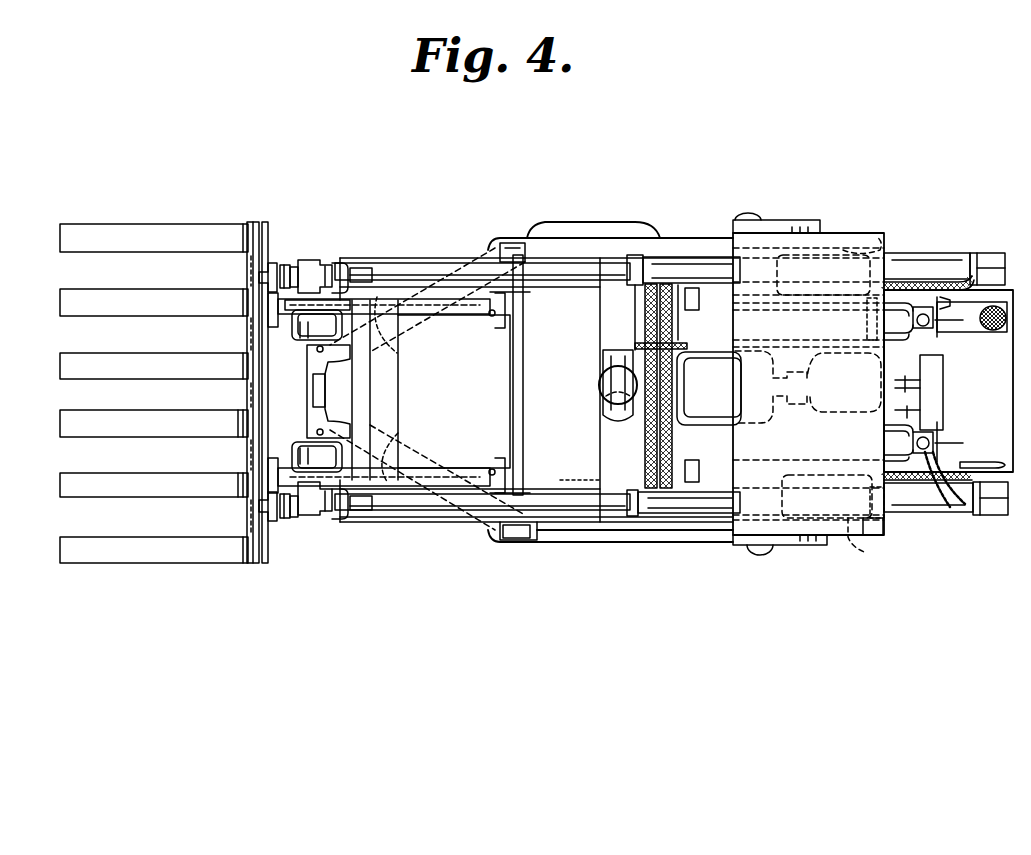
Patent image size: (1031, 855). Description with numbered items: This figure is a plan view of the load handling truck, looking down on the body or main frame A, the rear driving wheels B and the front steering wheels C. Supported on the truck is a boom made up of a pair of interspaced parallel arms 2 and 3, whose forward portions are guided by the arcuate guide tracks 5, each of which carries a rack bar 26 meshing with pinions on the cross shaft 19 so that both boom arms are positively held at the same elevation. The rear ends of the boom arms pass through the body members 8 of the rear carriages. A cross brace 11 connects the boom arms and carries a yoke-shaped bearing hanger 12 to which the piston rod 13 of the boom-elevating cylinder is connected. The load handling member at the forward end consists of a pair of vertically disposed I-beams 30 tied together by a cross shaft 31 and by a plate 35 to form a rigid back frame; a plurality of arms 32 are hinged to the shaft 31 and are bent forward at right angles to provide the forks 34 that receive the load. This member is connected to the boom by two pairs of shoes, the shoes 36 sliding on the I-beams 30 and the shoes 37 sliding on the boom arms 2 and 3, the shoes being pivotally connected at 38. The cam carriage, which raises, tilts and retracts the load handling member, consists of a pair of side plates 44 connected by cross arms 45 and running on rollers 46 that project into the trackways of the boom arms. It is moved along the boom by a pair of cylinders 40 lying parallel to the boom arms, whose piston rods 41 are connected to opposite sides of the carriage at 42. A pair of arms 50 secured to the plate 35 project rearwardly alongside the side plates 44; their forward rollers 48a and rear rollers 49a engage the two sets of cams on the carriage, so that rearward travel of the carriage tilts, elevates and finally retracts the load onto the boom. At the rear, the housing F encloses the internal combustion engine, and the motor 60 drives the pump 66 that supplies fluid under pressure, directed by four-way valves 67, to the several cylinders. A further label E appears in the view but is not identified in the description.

The boom arm 2 is at (575, 468).
The boom arm 3 is at (572, 290).
The arcuate guide track 5 is at (525, 243).
The carriage body member 8 is at (843, 250).
The cross brace 11 is at (600, 328).
The yoke-shaped bearing hanger 12 is at (610, 412).
The piston rod 13 is at (605, 392).
The cross shaft 19 is at (523, 410).
The rack bar 26 is at (455, 262).
The I-beam 30 is at (259, 277).
The cross shaft 31 is at (258, 225).
The arm 32 is at (241, 485).
The fork 34 is at (143, 378).
The plate 35 is at (262, 383).
The shoe 36 is at (285, 262).
The shoe 37 is at (320, 262).
The pivotal connection 38 is at (294, 266).
The cylinder 40 is at (668, 255).
The piston rod 41 is at (400, 268).
The piston rod connection 42 is at (345, 265).
The side plate 44 is at (508, 322).
The cross arm 45 is at (398, 392).
The roller 46 is at (356, 278).
The forward roller 48a is at (398, 350).
The rear roller 49a is at (490, 315).
The arm 50 is at (446, 316).
The motor 60 is at (709, 388).
The pump 66 is at (820, 417).
The four-way valve 67 is at (936, 330).
The main frame A is at (604, 559).
The rear driving wheel B is at (792, 228).
The front steering wheel C is at (300, 345).
The fork assembly E is at (184, 572).
The housing F is at (948, 381).